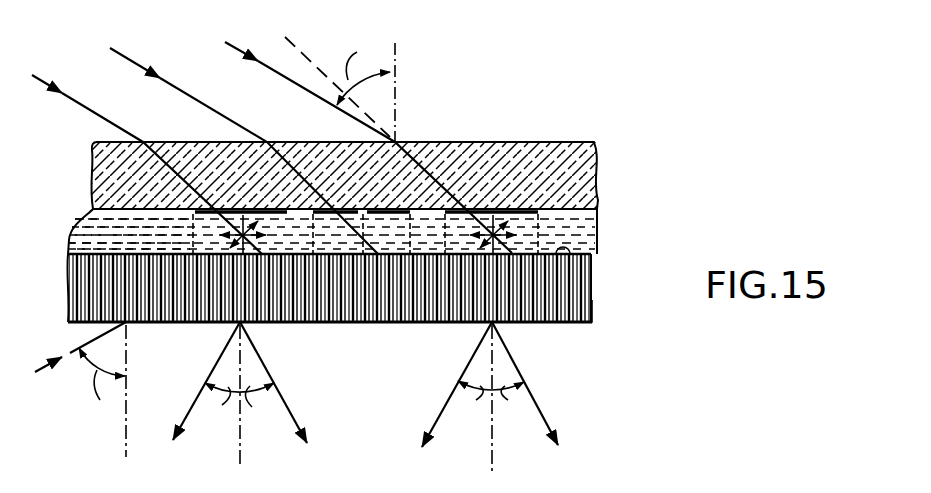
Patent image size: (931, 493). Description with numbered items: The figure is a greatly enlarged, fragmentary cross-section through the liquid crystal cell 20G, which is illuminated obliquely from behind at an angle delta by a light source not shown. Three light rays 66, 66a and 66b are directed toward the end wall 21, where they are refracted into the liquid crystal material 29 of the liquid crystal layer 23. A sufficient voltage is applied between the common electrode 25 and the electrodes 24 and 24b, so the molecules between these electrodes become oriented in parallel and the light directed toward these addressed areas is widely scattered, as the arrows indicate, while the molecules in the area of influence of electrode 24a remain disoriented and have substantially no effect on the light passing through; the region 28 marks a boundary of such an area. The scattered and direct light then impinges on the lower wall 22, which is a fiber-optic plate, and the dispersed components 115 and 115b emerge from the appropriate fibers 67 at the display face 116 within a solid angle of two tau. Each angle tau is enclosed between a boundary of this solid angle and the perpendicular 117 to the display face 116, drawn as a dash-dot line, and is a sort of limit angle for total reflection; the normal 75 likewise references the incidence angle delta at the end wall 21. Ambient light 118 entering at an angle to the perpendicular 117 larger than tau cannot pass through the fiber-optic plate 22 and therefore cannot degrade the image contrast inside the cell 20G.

The cell 20G is at (563, 128).
The end wall 21 is at (117, 176).
The lower wall 22 is at (100, 289).
The liquid crystal layer 23 is at (604, 204).
The electrode 24 is at (505, 210).
The electrode 24a is at (340, 210).
The electrode 24b is at (224, 211).
The common electrode 25 is at (565, 250).
The domain boundary 28 is at (423, 250).
The liquid crystal material 29 is at (100, 230).
The light ray 66 is at (277, 72).
The light ray 66a is at (193, 92).
The light ray 66b is at (97, 107).
The fibers 67 is at (577, 305).
The normal line 75 is at (397, 88).
The light 115 is at (443, 410).
The light 115b is at (186, 418).
The display face 116 is at (535, 323).
The perpendicular 117 is at (128, 372).
The light 118 is at (45, 372).